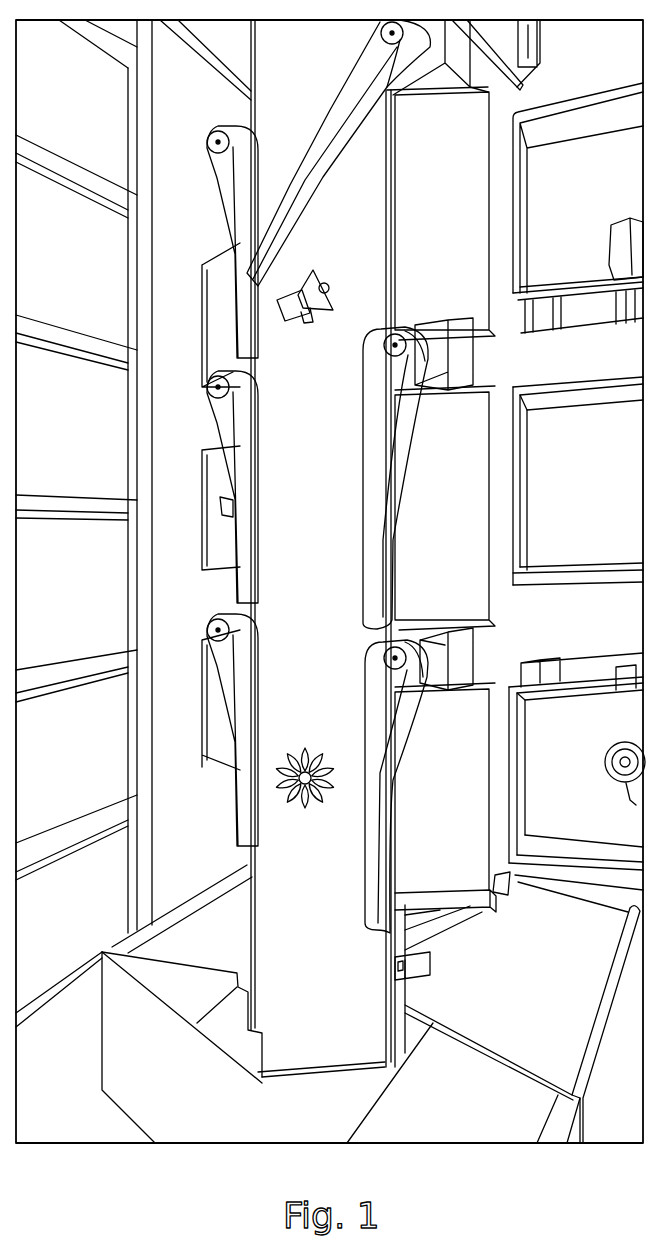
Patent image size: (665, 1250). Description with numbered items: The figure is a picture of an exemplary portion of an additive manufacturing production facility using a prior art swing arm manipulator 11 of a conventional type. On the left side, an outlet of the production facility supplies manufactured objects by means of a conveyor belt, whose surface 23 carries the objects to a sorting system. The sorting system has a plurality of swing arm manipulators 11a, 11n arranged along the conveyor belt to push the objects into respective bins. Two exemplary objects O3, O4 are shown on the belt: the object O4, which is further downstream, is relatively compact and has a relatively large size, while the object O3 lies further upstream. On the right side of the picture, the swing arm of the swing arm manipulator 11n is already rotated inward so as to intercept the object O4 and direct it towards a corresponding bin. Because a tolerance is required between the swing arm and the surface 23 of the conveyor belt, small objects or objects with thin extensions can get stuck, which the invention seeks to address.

The swing arm manipulator 11 is at (385, 690).
The swing arm manipulator 11a is at (226, 186).
The swing arm manipulator 11n is at (369, 68).
The surface of the conveyor belt 23 is at (342, 581).
The object O3 is at (277, 806).
The object O4 is at (335, 284).